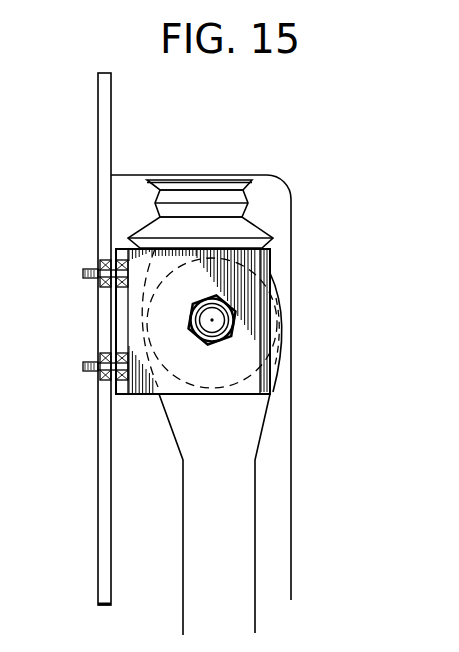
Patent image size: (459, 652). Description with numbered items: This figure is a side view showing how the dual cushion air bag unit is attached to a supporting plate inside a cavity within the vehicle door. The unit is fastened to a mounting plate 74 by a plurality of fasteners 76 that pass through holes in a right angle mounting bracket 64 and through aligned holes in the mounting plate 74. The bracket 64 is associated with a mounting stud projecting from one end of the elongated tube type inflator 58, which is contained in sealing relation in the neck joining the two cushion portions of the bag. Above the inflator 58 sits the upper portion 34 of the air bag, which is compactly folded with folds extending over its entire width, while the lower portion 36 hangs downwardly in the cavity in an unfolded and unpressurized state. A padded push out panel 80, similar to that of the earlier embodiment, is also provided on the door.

The mounting plate 74 is at (112, 136).
The upper portion 34 is at (196, 174).
The right angle mounting bracket 64 is at (262, 261).
The padded push out panel 80 is at (293, 347).
The fasteners 76 is at (88, 369).
The tube type inflator 58 is at (240, 380).
The lower portion 36 is at (242, 619).